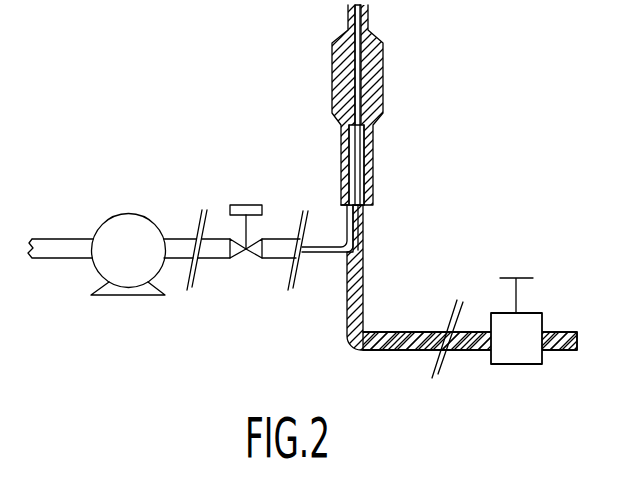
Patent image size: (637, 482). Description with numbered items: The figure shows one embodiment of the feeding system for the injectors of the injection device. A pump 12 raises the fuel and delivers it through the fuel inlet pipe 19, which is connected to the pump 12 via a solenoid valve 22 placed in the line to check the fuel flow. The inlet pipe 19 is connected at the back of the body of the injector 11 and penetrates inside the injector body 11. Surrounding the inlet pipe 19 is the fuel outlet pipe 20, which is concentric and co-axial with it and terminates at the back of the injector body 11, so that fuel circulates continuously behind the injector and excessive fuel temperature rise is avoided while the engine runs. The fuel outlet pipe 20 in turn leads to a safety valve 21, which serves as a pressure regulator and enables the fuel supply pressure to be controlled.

The injector 11 is at (375, 52).
The pump 12 is at (127, 220).
The fuel inlet pipe 19 is at (325, 254).
The fuel outlet pipe 20 is at (364, 259).
The safety valve 21 is at (516, 321).
The solenoid valve 22 is at (257, 206).